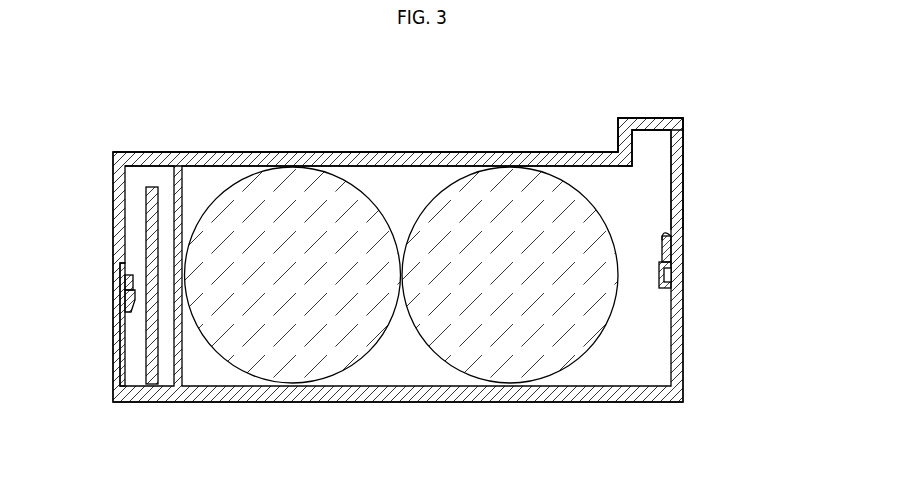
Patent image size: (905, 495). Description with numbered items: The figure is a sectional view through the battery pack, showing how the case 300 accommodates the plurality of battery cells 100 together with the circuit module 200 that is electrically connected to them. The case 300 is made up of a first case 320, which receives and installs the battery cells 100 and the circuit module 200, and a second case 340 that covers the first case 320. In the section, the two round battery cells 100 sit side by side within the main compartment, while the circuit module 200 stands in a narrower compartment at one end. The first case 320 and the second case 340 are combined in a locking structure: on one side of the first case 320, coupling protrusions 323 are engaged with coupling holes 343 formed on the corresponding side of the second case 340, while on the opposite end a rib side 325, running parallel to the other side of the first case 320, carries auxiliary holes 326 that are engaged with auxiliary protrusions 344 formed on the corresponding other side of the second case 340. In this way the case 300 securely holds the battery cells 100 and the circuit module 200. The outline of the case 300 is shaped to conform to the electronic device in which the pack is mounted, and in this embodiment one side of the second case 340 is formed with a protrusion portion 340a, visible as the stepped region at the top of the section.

The battery cell 100 is at (513, 372).
The circuit module 200 is at (146, 190).
The case 300 is at (781, 260).
The first case 320 is at (683, 406).
The coupling protrusion 323 is at (666, 270).
The rib side 325 is at (122, 362).
The auxiliary hole 326 is at (115, 307).
The second case 340 is at (692, 111).
The protrusion portion 340a is at (645, 122).
The coupling hole 343 is at (668, 240).
The auxiliary protrusion 344 is at (118, 293).